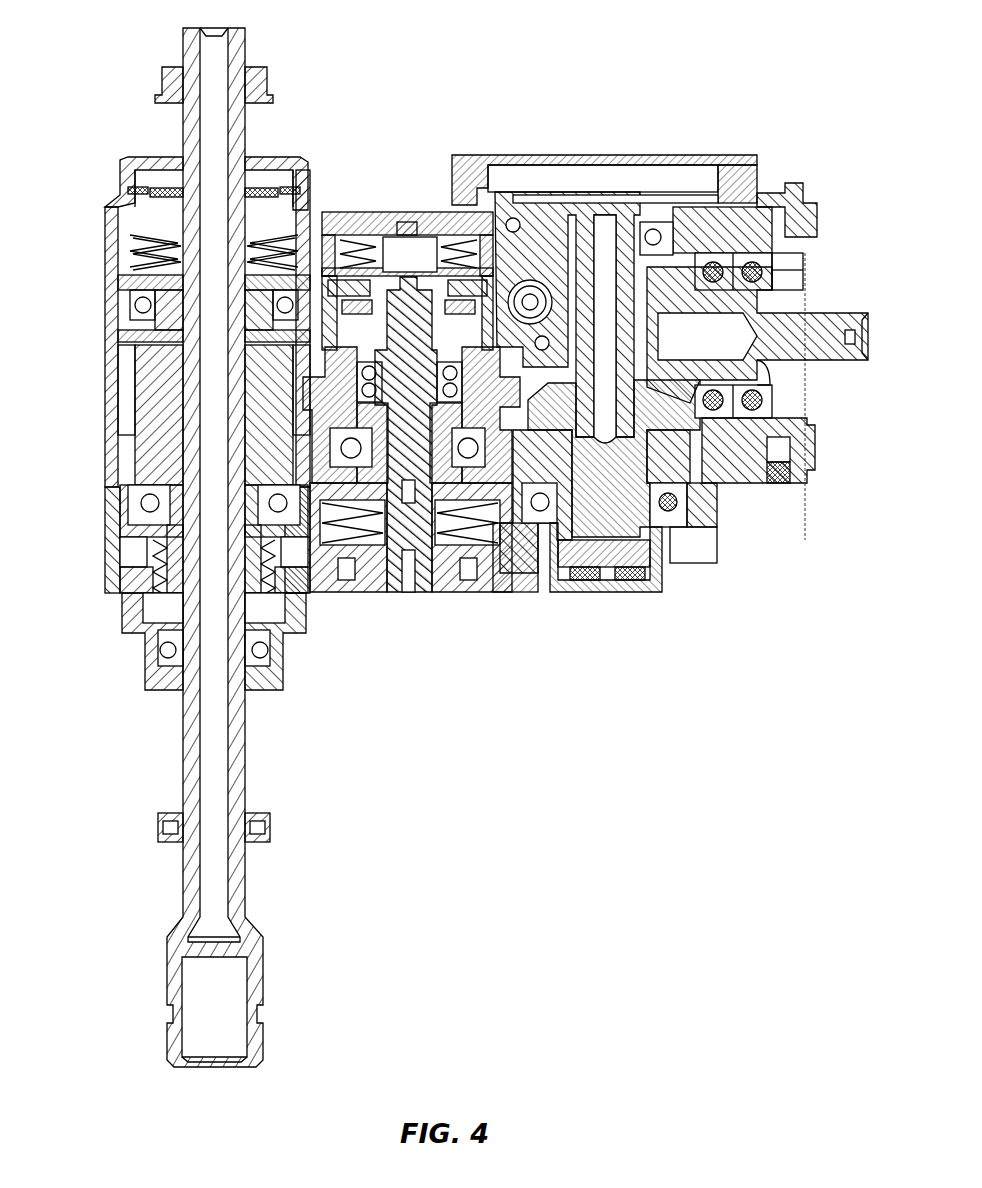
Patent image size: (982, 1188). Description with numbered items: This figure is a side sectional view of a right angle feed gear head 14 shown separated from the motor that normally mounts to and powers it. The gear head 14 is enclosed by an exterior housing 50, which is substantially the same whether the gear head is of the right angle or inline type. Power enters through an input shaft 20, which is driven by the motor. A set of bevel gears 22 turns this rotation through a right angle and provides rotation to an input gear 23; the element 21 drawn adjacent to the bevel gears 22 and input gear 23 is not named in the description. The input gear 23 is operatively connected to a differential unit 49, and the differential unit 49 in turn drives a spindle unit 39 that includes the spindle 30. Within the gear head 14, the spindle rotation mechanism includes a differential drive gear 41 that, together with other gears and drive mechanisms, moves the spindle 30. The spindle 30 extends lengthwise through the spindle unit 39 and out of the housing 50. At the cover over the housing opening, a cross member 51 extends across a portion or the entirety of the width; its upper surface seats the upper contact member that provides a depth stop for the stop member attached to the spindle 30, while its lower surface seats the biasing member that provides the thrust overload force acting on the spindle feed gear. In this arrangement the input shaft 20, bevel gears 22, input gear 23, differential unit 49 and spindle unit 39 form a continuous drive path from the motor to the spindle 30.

The gear head 14 is at (365, 102).
The input shaft 20 is at (817, 327).
The hub 21 is at (607, 480).
The bevel gears 22 is at (727, 443).
The input gear 23 is at (548, 452).
The spindle 30 is at (190, 880).
The spindle unit 39 is at (108, 147).
The differential drive gear 41 is at (497, 458).
The differential unit 49 is at (442, 632).
The housing 50 is at (105, 387).
The cross member 51 is at (123, 173).